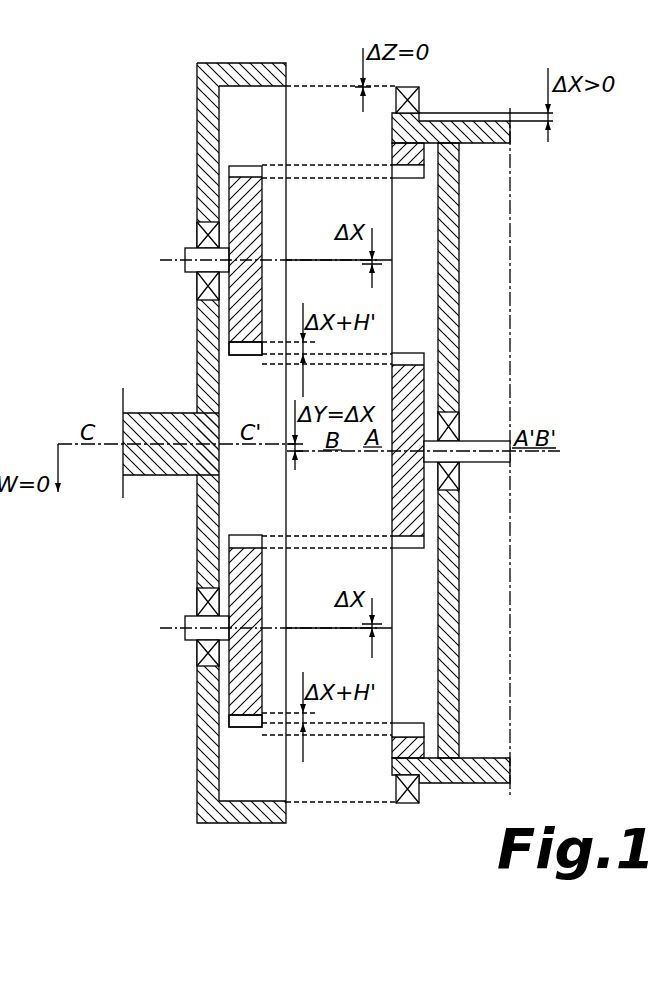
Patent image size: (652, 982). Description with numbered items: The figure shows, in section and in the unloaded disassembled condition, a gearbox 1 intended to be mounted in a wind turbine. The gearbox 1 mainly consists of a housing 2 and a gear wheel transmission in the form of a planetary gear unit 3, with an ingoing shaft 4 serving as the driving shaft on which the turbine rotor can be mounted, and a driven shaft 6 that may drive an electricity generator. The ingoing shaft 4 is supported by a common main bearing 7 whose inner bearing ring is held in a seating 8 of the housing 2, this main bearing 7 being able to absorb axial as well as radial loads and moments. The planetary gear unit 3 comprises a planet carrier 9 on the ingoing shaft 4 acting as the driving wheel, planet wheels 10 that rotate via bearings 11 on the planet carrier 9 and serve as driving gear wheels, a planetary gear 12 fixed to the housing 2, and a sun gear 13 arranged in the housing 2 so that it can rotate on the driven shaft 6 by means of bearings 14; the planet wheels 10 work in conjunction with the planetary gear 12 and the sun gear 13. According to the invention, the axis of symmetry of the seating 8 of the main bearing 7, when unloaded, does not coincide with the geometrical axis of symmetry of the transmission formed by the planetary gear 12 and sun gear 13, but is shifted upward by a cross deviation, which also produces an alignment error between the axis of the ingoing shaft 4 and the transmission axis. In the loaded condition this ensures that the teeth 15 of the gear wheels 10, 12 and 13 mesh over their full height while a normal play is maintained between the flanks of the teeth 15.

The gearbox 1 is at (607, 153).
The housing 2 is at (483, 783).
The planetary gear unit 3 is at (328, 830).
The ingoing shaft 4 is at (150, 463).
The driven shaft 6 is at (484, 440).
The main bearing 7 is at (420, 100).
The seating 8 is at (445, 146).
The planet carrier 9 is at (207, 172).
The planet wheels 10 is at (243, 306).
The bearings 11 is at (197, 236).
The planetary gear 12 is at (430, 152).
The sun gear 13 is at (417, 394).
The bearings 14 is at (463, 478).
The teeth 15 is at (246, 356).